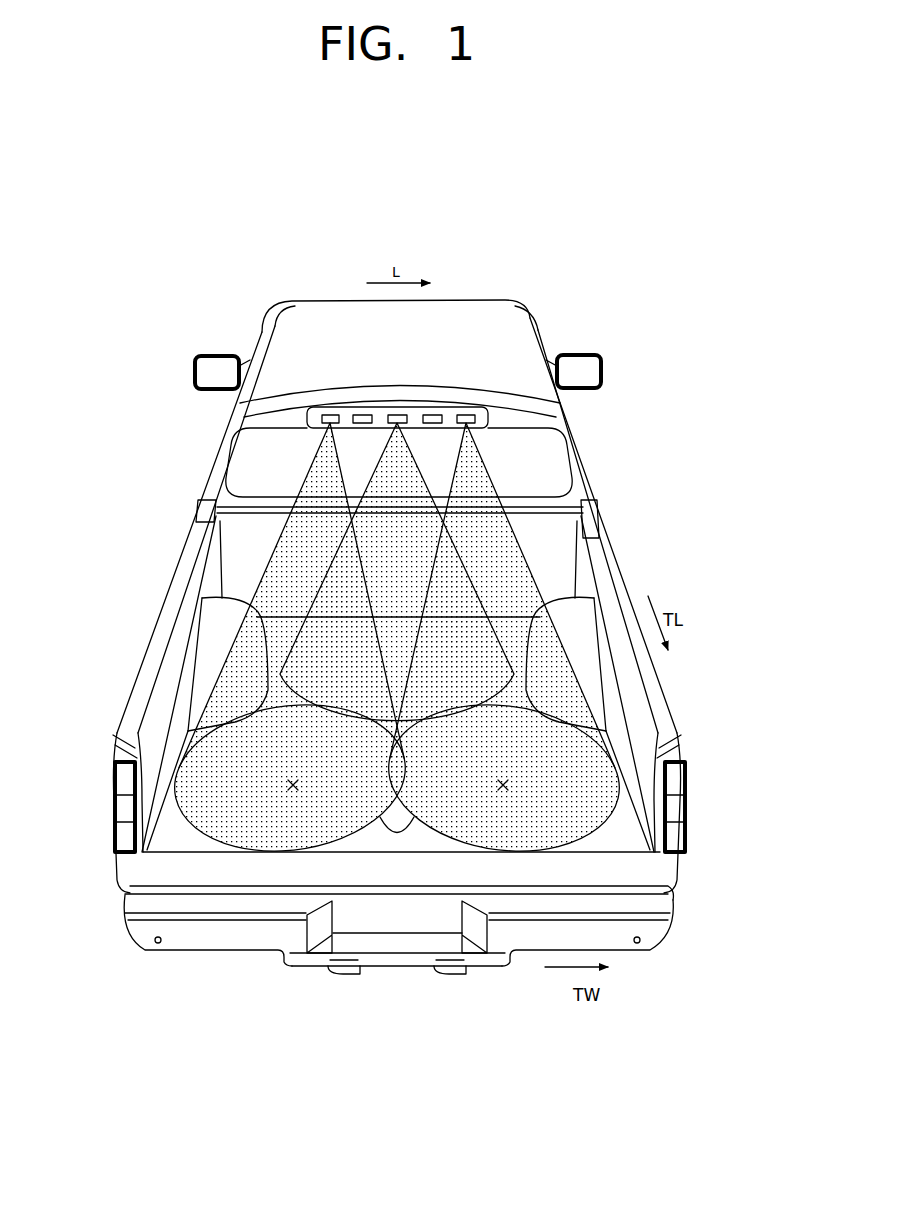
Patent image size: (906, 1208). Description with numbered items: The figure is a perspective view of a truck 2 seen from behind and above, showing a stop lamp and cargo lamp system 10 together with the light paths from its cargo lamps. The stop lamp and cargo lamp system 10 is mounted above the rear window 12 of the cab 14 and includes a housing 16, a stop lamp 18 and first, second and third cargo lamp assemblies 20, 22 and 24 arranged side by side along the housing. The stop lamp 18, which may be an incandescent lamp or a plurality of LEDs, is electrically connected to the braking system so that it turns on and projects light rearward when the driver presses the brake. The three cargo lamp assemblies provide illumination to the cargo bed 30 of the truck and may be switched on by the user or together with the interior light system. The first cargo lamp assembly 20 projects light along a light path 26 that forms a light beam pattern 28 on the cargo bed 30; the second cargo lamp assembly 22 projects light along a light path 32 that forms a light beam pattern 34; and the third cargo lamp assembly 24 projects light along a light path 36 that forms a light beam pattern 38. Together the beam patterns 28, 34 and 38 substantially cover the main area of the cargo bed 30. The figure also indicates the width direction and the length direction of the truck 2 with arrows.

The truck 2 is at (680, 416).
The stop lamp and cargo lamp system 10 is at (303, 417).
The rear window 12 is at (552, 469).
The cab 14 is at (293, 397).
The housing 16 is at (548, 414).
The stop lamp 18 is at (364, 412).
The first cargo lamp assembly 20 is at (332, 406).
The second cargo lamp assembly 22 is at (398, 412).
The third cargo lamp assembly 24 is at (466, 412).
The light path 26 is at (273, 547).
The light beam pattern 28 is at (212, 828).
The cargo bed 30 is at (393, 843).
The light path 32 is at (377, 462).
The light beam pattern 34 is at (275, 782).
The light path 36 is at (520, 547).
The light beam pattern 38 is at (432, 843).